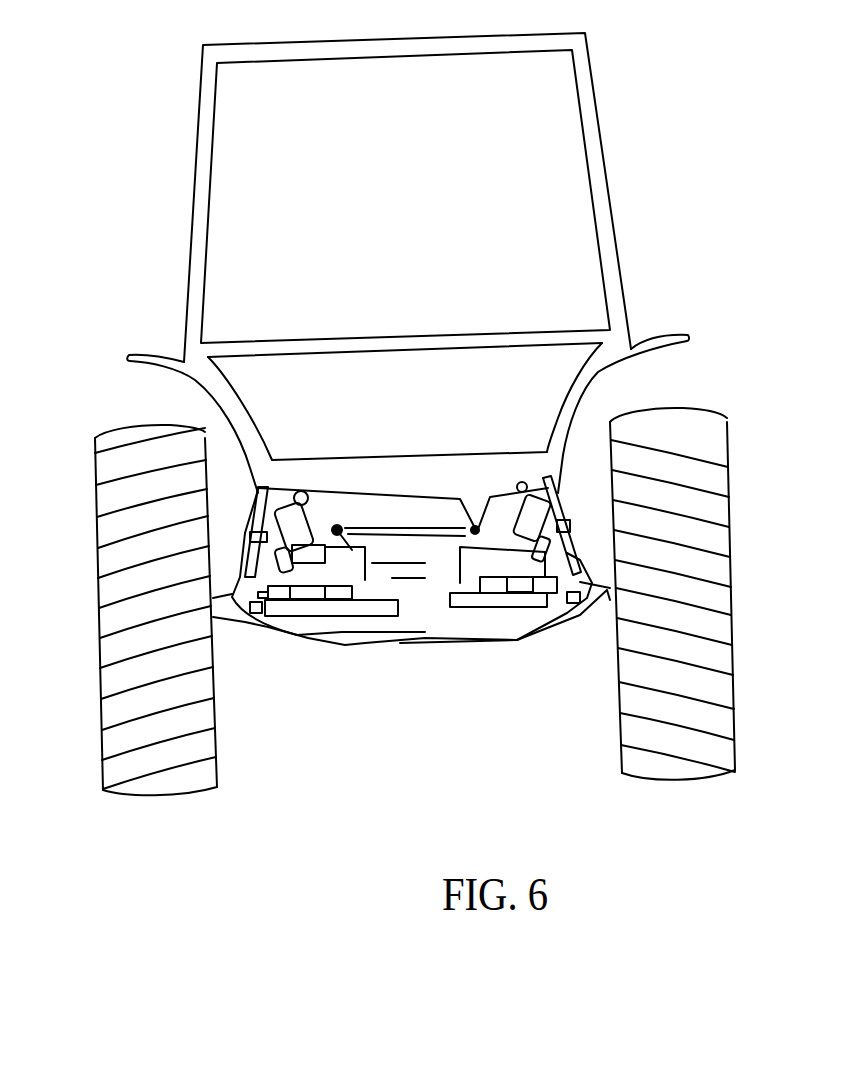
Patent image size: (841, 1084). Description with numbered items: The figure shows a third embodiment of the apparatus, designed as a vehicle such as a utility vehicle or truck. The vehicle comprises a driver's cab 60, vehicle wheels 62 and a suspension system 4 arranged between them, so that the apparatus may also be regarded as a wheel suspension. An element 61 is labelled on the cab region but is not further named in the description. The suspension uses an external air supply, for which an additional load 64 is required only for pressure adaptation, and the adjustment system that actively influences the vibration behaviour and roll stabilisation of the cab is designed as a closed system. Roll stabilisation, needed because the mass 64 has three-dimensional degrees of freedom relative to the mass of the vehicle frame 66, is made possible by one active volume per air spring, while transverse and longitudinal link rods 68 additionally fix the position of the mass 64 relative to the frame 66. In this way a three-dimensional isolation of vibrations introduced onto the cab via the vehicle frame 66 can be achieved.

The suspension system 4 is at (422, 693).
The driver's cab 60 is at (618, 262).
The windshield 61 is at (607, 167).
The vehicle wheels 62 is at (217, 758).
The additional load 64 is at (580, 398).
The vehicle frame 66 is at (352, 635).
The transverse and longitudinal link rods 68 is at (407, 527).